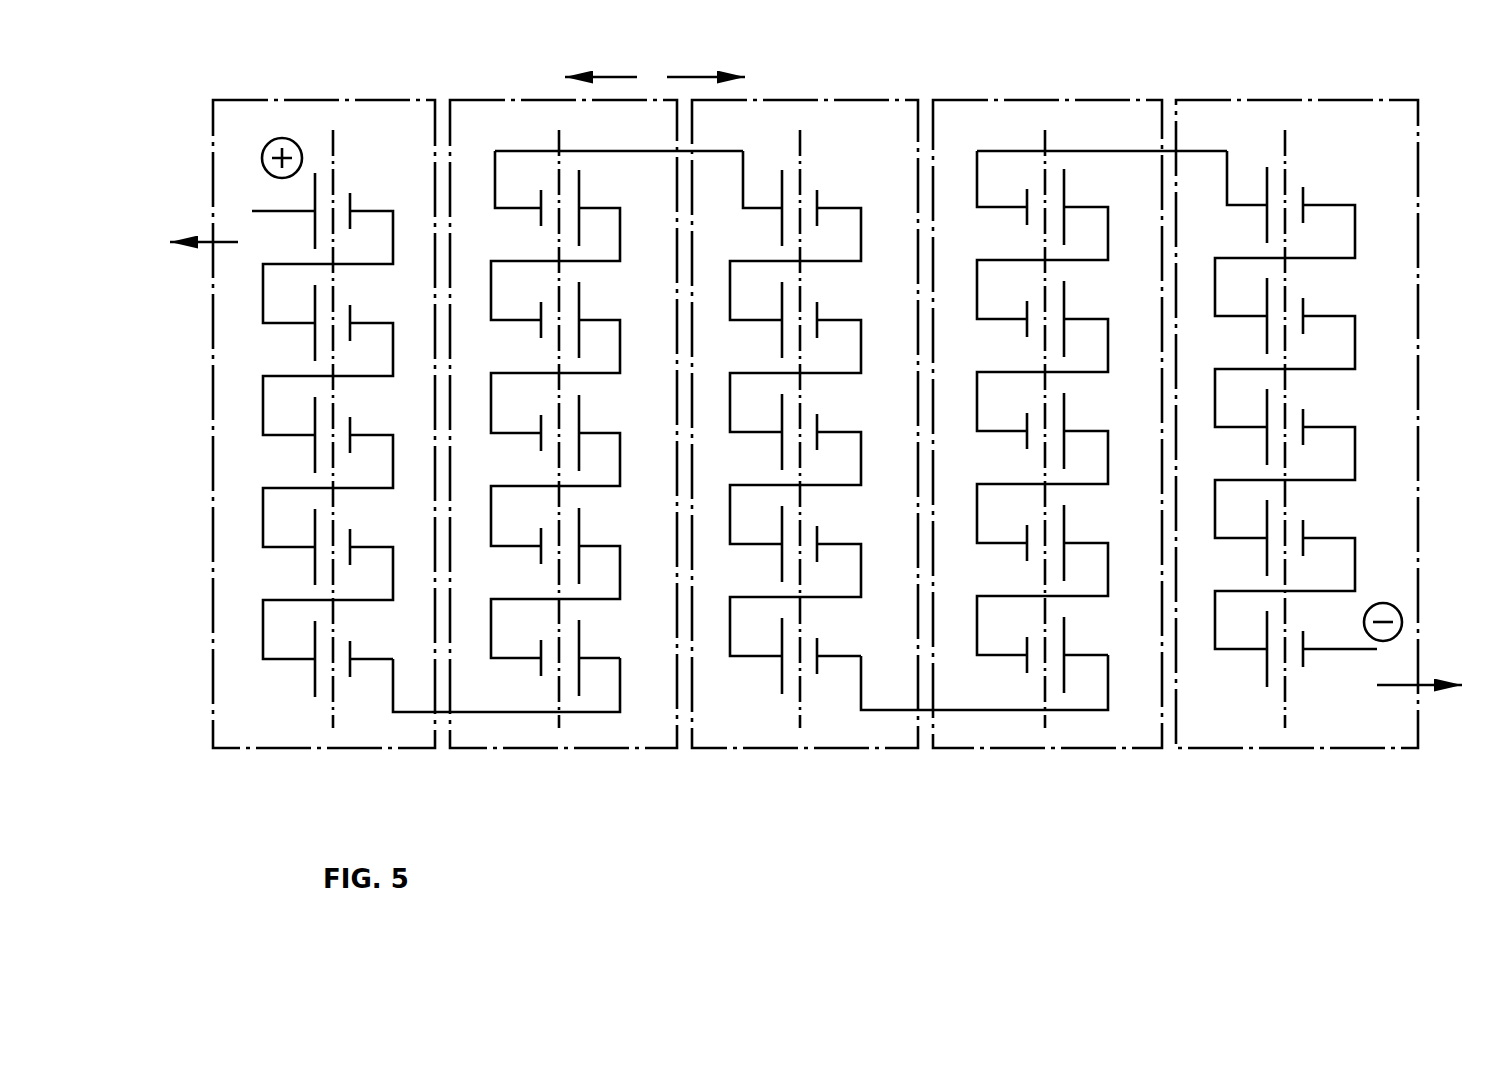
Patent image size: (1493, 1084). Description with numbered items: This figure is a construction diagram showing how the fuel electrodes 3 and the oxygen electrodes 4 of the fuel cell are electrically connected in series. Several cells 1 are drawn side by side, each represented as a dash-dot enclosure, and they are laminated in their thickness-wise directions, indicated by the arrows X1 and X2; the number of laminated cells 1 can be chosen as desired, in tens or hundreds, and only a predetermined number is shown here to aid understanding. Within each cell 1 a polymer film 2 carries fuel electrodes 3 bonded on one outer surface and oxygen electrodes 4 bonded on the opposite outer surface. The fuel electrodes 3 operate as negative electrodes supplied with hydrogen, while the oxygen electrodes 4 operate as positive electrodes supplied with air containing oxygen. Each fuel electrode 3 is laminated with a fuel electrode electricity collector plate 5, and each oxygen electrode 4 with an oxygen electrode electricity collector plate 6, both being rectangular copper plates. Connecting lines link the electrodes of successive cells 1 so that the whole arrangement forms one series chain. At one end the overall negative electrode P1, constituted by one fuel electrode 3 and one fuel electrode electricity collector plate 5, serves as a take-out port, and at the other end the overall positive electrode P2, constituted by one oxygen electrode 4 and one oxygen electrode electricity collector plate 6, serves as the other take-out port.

The cell 1 is at (318, 750).
The polymer film 2 is at (336, 148).
The fuel electrode 3 is at (353, 199).
The oxygen electrode 4 is at (313, 231).
The fuel electrode electricity collector plate 5 is at (1400, 682).
The oxygen electrode electricity collector plate 6 is at (210, 240).
The overall negative electrode P1 is at (1400, 634).
The overall positive electrode P2 is at (297, 140).
The direction X1 is at (605, 77).
The direction X2 is at (695, 77).